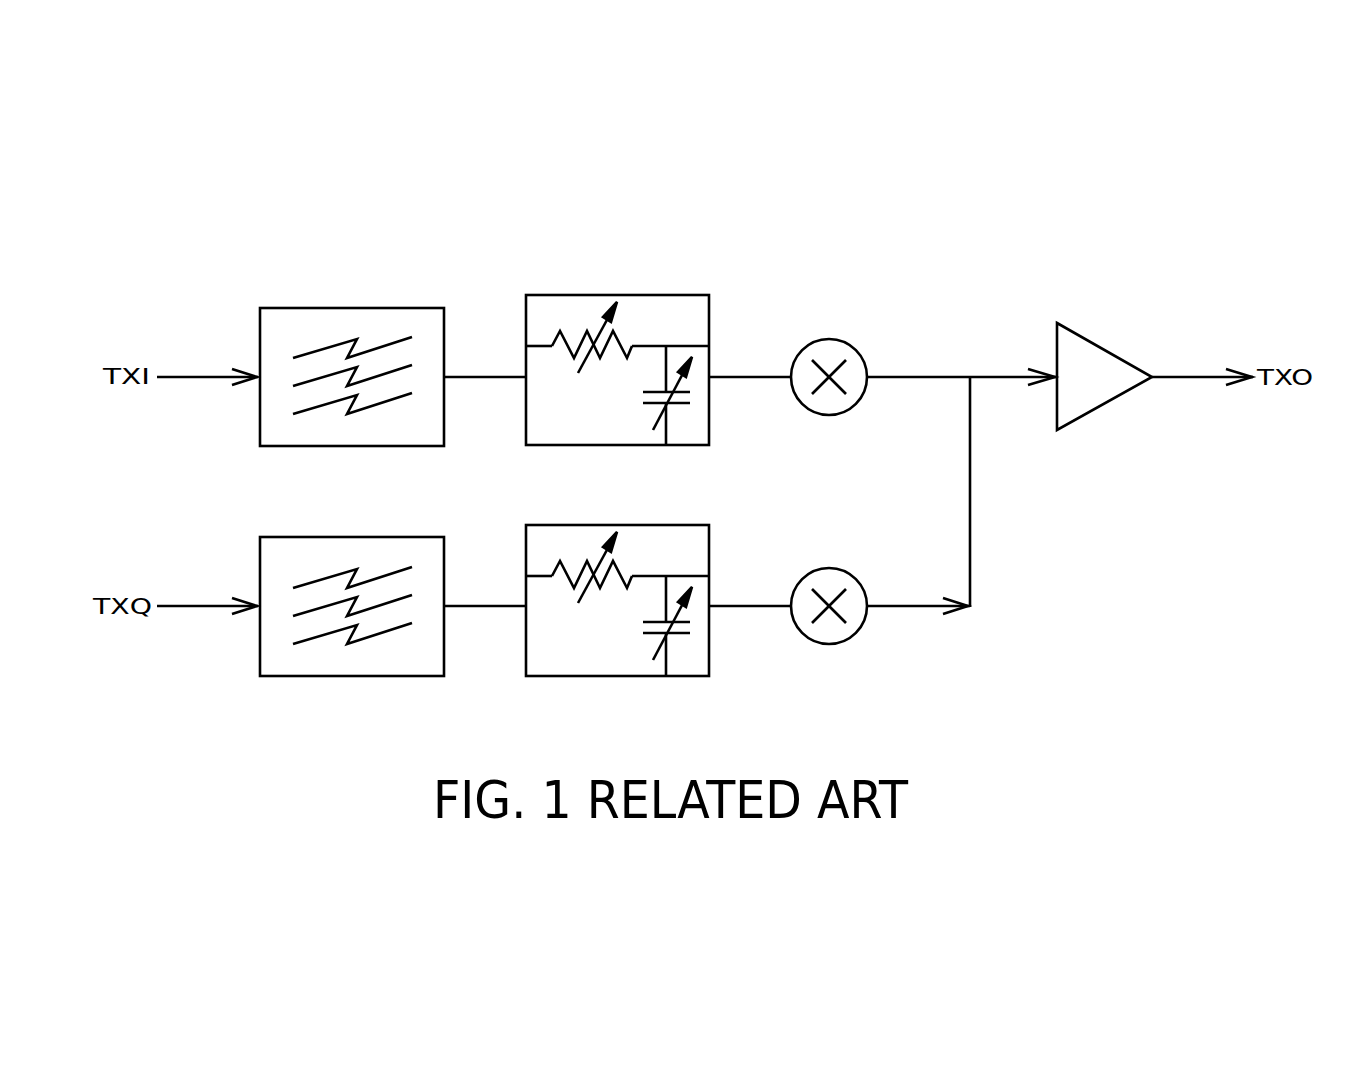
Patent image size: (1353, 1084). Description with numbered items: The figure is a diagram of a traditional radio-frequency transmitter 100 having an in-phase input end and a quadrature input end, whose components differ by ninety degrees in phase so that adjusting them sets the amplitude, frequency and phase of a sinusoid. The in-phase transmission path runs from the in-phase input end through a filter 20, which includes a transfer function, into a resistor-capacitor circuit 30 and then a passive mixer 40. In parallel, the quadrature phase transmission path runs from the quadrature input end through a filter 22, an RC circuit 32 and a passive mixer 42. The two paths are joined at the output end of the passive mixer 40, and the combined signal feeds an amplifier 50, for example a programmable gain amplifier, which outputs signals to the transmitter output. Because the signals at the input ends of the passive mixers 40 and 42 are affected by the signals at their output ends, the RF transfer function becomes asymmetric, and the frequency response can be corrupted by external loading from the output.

The RF transmitter 100 is at (1138, 158).
The filter 20 is at (418, 307).
The filter 22 is at (418, 536).
The resistor-capacitor (RC) circuit 30 is at (672, 293).
The RC circuit 32 is at (672, 523).
The passive mixer 40 is at (830, 337).
The passive mixer 42 is at (830, 568).
The amplifier 50 is at (1087, 337).